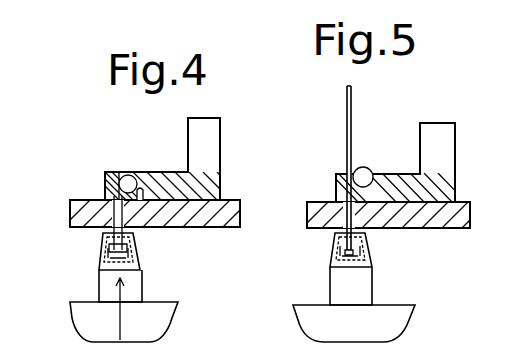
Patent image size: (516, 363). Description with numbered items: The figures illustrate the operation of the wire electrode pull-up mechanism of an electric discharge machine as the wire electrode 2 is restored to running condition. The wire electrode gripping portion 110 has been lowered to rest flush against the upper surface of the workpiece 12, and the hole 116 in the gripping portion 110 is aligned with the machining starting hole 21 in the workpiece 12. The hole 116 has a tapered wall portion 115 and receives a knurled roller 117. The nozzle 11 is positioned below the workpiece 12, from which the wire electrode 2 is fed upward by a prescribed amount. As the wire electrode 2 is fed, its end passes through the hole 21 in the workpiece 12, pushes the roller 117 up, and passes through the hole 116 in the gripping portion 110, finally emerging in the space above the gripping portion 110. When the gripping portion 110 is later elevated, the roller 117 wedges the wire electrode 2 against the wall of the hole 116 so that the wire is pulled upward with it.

In FIG. 5, the wire electrode 2 is at (345, 122).
In FIG. 4, the nozzle 11 is at (133, 288).
In FIG. 5, the nozzle 11 is at (367, 287).
In FIG. 4, the workpiece 12 is at (212, 222).
In FIG. 5, the workpiece 12 is at (447, 223).
In FIG. 4, the wire electrode insertion hole 21 is at (112, 210).
In FIG. 5, the wire electrode insertion hole 21 is at (355, 215).
In FIG. 4, the wire electrode gripping portion 110 is at (163, 172).
In FIG. 4, the tapered wall portion 115 is at (168, 195).
In FIG. 4, the hole 116 is at (112, 187).
In FIG. 5, the hole 116 is at (395, 185).
In FIG. 4, the knurled roller 117 is at (128, 175).
In FIG. 5, the knurled roller 117 is at (367, 167).